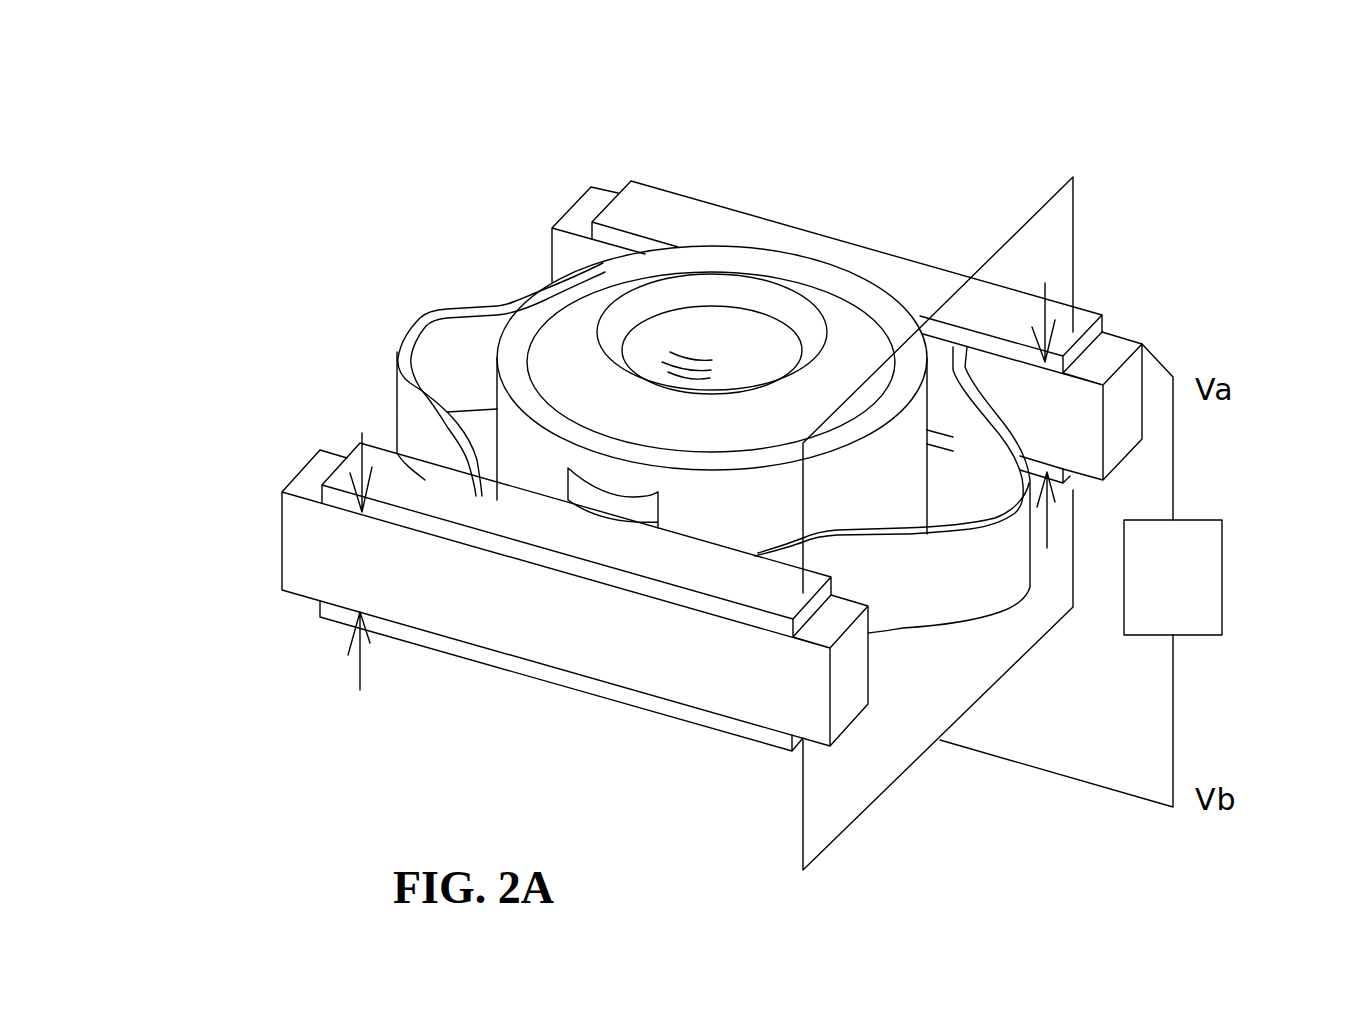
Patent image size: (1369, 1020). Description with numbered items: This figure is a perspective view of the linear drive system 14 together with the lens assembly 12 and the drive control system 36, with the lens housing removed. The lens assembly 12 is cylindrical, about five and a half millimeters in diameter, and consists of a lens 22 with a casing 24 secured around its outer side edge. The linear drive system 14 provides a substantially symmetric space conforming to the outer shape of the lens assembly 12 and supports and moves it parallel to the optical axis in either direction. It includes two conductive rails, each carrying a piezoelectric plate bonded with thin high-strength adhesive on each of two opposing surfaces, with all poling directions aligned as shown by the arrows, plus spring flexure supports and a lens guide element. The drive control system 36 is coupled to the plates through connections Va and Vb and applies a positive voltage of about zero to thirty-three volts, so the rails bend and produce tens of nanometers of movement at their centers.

The lens assembly 12 is at (552, 347).
The linear drive system 14 is at (465, 626).
The lens 22 is at (720, 333).
The casing 24 is at (505, 330).
The drive control system 36 is at (1223, 578).